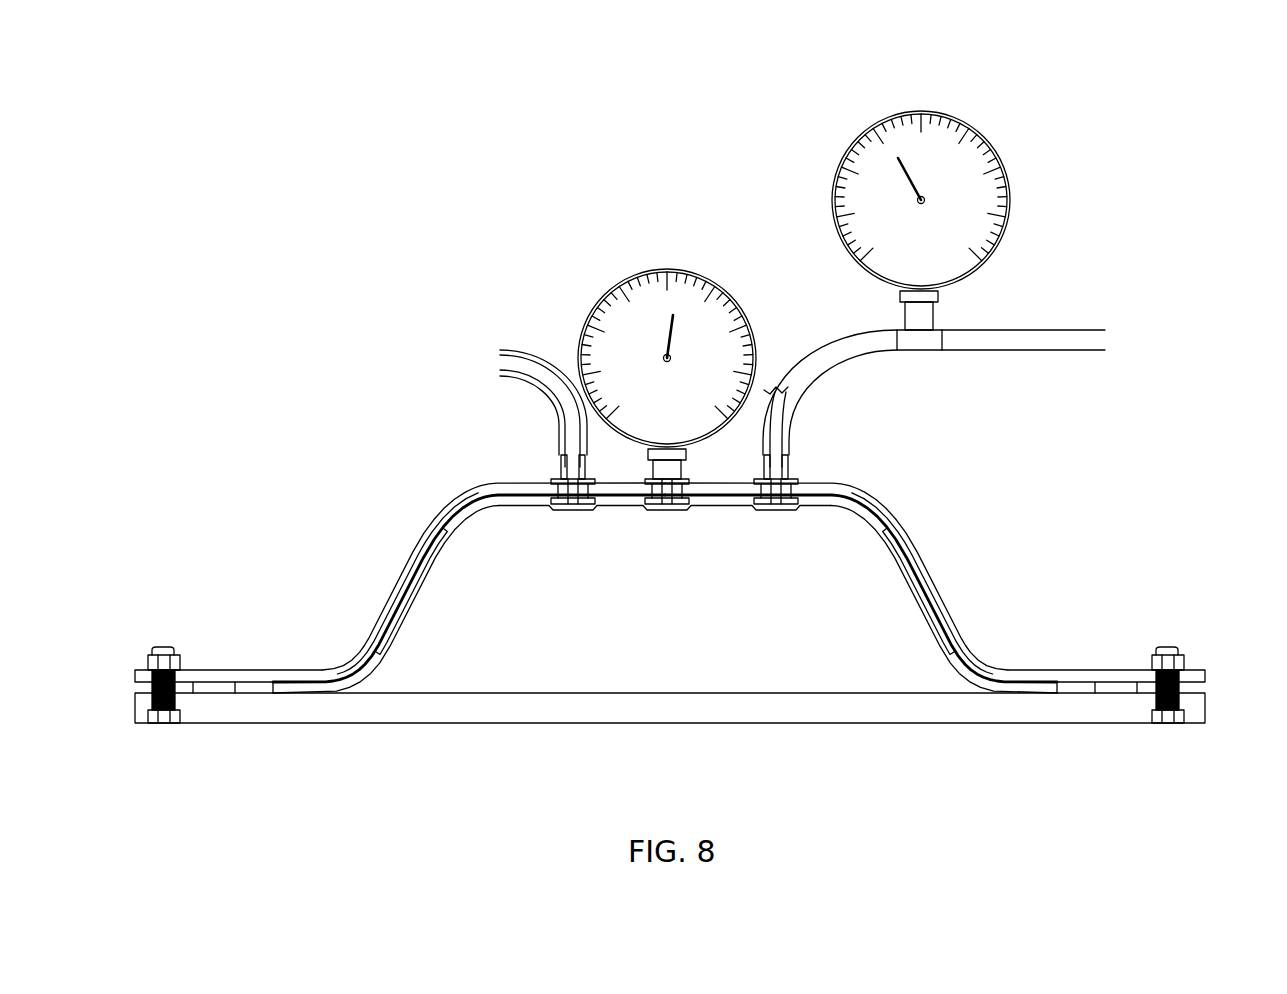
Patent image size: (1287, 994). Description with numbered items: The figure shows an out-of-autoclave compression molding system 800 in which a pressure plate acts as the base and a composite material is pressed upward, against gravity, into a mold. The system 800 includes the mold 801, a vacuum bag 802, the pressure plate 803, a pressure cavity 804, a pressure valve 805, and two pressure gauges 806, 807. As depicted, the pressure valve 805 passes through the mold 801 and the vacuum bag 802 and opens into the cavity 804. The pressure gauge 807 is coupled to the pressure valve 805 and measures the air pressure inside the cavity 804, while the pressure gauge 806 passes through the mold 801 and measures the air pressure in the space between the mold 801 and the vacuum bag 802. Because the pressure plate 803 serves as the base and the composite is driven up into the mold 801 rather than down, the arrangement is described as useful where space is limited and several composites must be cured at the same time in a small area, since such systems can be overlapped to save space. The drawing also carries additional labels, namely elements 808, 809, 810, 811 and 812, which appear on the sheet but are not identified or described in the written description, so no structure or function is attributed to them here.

The system 800 is at (261, 86).
The mold 801 is at (937, 572).
The vacuum bag 802 is at (488, 512).
The pressure plate 803 is at (552, 480).
The pressure cavity 804 is at (482, 724).
The pressure valve 805 is at (797, 481).
The pressure gauge 806 is at (265, 668).
The pressure gauge 807 is at (161, 726).
The internal cavity 808 is at (751, 640).
The right clamping frame plate 809 is at (1102, 690).
The vacuum gauge (inHg) 810 is at (667, 270).
The gauge port fitting 811 is at (643, 482).
The pressure gauge (psi) 812 is at (921, 112).